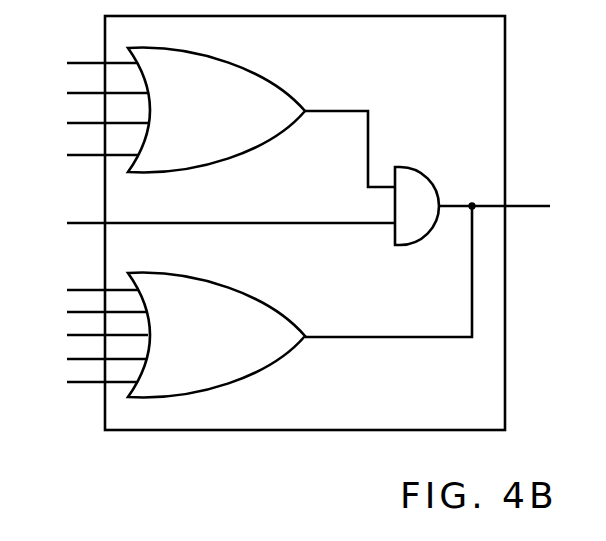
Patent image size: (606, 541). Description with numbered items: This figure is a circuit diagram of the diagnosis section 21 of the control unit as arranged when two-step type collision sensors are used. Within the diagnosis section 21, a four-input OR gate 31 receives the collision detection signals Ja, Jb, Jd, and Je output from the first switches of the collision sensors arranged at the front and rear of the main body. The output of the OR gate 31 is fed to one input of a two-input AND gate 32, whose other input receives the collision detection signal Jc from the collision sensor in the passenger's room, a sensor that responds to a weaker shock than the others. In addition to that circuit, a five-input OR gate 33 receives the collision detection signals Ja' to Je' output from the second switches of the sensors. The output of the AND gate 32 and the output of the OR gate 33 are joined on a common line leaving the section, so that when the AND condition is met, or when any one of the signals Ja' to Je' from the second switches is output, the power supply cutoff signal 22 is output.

The diagnosis section 21 is at (505, 42).
The power supply cutoff signal 22 is at (522, 206).
The 4-input OR gate 31 is at (258, 72).
The 2-input AND gate 32 is at (408, 245).
The 5-input OR gate 33 is at (257, 374).